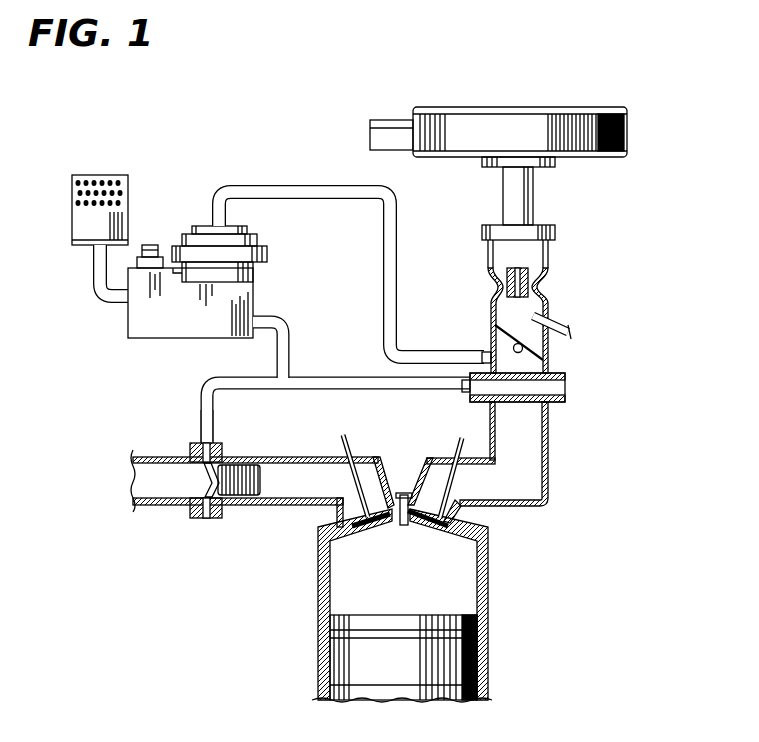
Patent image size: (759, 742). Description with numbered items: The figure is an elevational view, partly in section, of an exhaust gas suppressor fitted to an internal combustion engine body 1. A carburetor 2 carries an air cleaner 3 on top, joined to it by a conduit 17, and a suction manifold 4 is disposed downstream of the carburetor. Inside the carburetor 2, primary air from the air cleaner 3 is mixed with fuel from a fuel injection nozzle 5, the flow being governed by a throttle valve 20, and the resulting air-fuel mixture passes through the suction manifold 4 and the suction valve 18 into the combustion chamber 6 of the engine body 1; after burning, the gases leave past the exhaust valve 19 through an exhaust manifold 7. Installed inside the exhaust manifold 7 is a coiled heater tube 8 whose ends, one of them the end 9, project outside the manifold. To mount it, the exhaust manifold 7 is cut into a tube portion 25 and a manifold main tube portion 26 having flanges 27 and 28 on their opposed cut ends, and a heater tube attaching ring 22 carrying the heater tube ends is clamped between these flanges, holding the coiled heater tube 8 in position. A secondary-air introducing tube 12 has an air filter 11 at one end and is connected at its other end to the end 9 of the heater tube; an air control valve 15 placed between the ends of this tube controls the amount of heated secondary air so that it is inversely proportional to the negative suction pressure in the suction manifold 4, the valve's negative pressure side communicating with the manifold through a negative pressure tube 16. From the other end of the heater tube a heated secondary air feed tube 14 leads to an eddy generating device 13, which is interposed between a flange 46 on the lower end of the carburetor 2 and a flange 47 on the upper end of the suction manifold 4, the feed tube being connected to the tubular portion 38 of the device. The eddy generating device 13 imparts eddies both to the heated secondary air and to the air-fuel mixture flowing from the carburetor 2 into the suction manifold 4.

The internal combustion engine body 1 is at (415, 597).
The carburetor 2 is at (552, 292).
The air cleaner 3 is at (553, 108).
The suction manifold 4 is at (549, 490).
The fuel injection nozzle 5 is at (569, 327).
The combustion chamber 6 is at (340, 590).
The exhaust manifold 7 is at (259, 493).
The coiled heater tube 8 is at (246, 497).
The end of coiled heater tube 9 is at (212, 441).
The air filter 11 is at (98, 178).
The secondary-air introducing tube 12 is at (92, 286).
The eddy generating device 13 is at (557, 390).
The heated secondary air feed tube 14 is at (343, 376).
The air control valve 15 is at (155, 341).
The negative pressure tube 16 is at (272, 186).
The conduit 17 is at (520, 206).
The suction valve 18 is at (437, 528).
The exhaust valve 19 is at (365, 528).
The throttle valve 20 is at (493, 327).
The heater tube attaching ring 22 is at (205, 501).
The tube portion 25 is at (153, 457).
The manifold main tube portion 26 is at (283, 458).
The flange 27 is at (195, 444).
The flange 28 is at (222, 456).
The tubular portion 38 is at (468, 393).
The flange 46 is at (566, 372).
The flange 47 is at (568, 403).